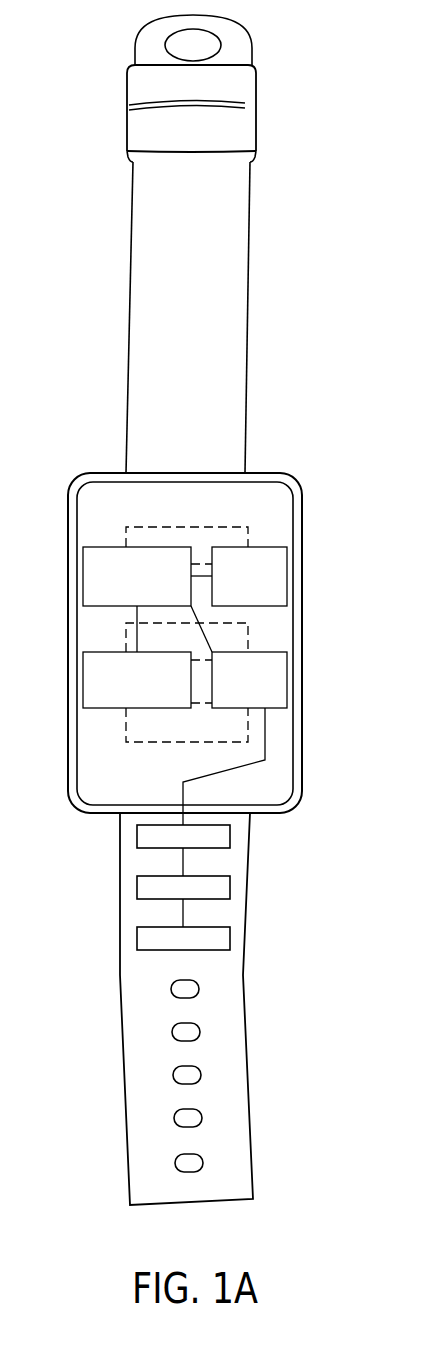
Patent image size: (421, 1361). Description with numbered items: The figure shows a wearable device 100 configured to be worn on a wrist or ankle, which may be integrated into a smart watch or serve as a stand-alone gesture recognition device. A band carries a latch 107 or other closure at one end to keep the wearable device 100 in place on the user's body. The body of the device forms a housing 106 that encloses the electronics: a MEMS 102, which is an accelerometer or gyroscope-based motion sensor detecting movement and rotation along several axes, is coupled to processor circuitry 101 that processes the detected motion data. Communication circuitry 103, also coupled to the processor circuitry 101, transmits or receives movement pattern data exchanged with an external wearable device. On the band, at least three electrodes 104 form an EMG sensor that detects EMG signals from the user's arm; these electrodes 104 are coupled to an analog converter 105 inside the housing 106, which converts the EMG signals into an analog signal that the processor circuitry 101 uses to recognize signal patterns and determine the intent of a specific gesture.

The wearable device 100 is at (270, 473).
The processor circuitry 101 is at (102, 547).
The microelectromechanical system (MEMS) 102 is at (92, 652).
The communication circuitry 103 is at (273, 547).
The electrodes 104 is at (230, 835).
The analog converter 105 is at (273, 652).
The housing 106 is at (293, 738).
The latch 107 is at (257, 93).